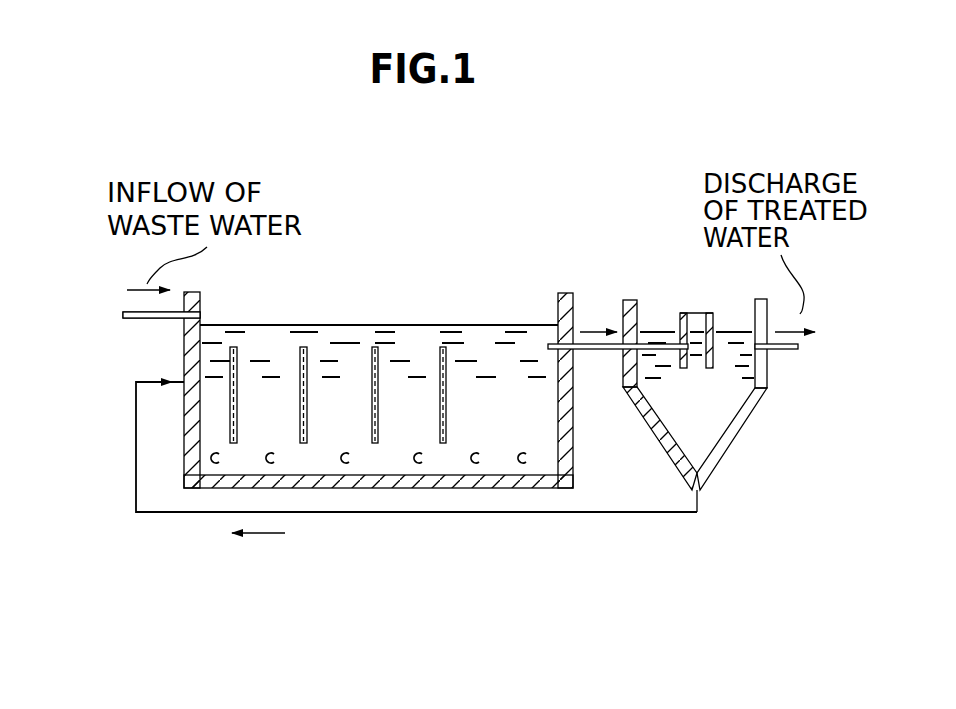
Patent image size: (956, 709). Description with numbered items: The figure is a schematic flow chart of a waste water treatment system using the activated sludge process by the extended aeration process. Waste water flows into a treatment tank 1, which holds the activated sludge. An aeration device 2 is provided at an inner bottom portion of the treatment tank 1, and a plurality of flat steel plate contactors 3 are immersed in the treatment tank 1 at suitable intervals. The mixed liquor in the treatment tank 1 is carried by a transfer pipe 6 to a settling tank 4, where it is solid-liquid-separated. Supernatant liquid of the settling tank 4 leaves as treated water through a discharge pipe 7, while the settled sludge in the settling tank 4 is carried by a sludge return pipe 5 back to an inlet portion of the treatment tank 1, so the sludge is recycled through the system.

The treatment tank 1 is at (415, 325).
The aeration device 2 is at (480, 455).
The flat steel plate contactors 3 is at (237, 368).
The settling tank 4 is at (757, 300).
The sludge return pipe 5 is at (580, 515).
The transfer pipe 6 is at (601, 350).
The discharge pipe 7 is at (786, 355).